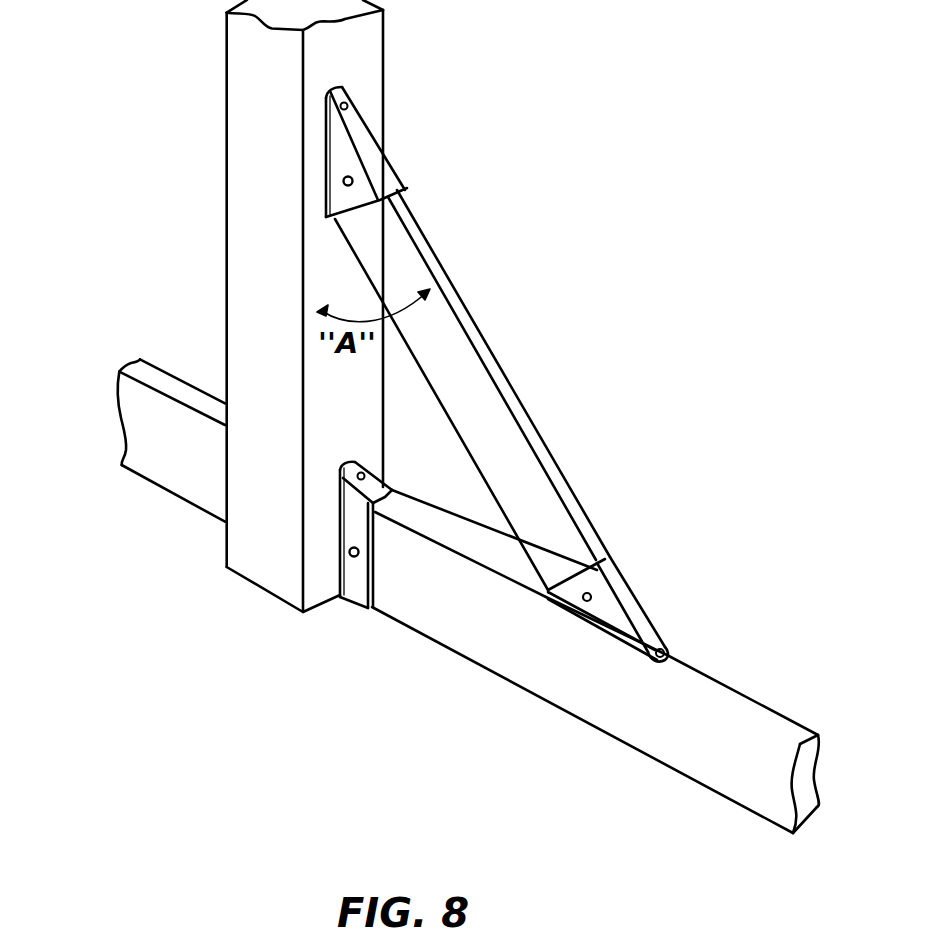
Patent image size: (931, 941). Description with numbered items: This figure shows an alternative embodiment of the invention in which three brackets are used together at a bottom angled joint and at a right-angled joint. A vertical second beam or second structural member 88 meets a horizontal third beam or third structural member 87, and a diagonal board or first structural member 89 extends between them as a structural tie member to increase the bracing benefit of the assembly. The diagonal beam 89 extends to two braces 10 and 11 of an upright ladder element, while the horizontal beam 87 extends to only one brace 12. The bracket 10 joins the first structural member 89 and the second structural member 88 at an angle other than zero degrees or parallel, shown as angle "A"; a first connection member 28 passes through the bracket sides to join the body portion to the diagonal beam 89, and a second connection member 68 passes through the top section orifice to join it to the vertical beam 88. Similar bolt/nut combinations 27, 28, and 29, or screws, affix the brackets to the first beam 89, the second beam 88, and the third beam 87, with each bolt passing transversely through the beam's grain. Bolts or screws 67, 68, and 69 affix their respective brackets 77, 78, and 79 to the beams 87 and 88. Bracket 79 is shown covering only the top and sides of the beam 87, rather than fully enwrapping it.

The bracket 10 is at (455, 200).
The brace 11 is at (698, 620).
The brace 12 is at (367, 625).
The bolt/nut combination 27 is at (583, 608).
The first connection member 28 is at (345, 181).
The bolt/nut combination 29 is at (348, 555).
The bolt/screw combination 67 is at (672, 652).
The second connection member 68 is at (349, 103).
The bolt/screw combination 69 is at (360, 472).
The bracket 77 is at (630, 597).
The bracket 78 is at (387, 173).
The bracket 79 is at (352, 511).
The third structural member 87 is at (670, 742).
The second structural member 88 is at (240, 245).
The first structural member 89 is at (490, 396).